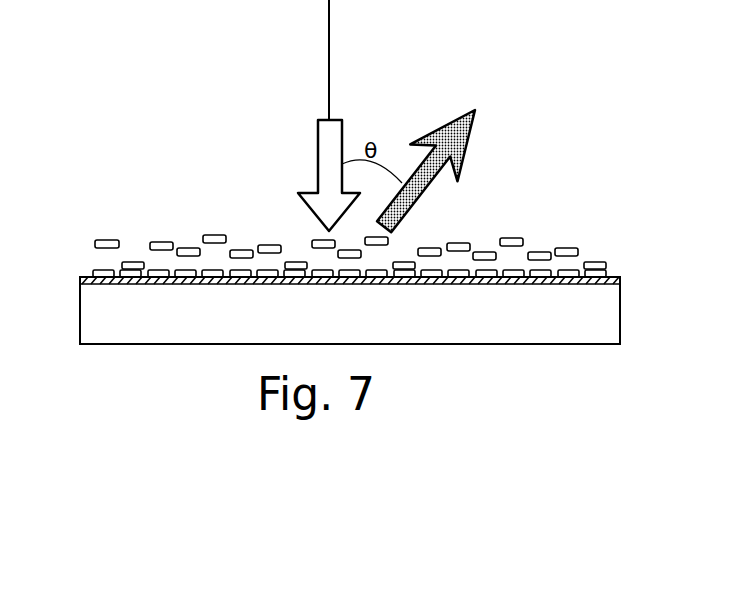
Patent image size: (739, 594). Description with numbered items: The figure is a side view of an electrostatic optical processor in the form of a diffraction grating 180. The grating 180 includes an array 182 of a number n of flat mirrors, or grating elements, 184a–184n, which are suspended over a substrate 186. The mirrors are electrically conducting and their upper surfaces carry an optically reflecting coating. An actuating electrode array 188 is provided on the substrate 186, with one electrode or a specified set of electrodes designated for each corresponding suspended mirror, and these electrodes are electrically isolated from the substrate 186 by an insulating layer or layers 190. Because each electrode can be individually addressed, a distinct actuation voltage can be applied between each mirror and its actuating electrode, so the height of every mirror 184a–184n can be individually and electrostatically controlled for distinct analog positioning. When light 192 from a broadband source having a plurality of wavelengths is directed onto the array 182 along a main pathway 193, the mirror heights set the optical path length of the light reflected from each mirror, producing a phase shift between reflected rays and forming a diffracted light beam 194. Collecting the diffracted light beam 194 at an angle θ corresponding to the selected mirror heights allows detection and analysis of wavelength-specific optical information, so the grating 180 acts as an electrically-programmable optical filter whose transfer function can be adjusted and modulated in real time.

The diffraction grating 180 is at (508, 150).
The array 182 is at (249, 203).
The flat mirror 184a is at (108, 240).
The flat mirror 184n is at (592, 262).
The substrate 186 is at (555, 325).
The actuating electrode array 188 is at (76, 269).
The insulating layer 190 is at (210, 285).
The light 192 is at (318, 128).
The main pathway 193 is at (329, 52).
The diffracted light beam 194 is at (425, 142).